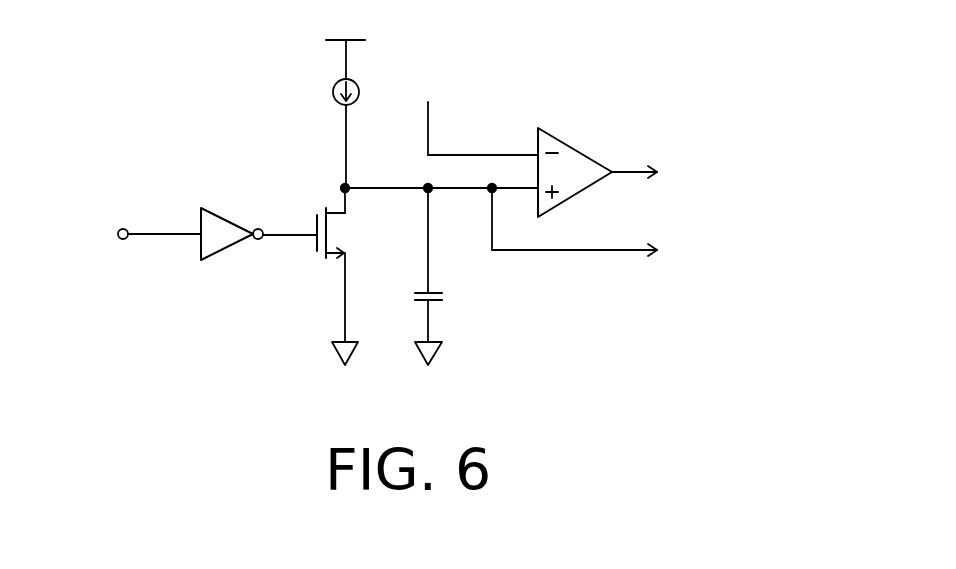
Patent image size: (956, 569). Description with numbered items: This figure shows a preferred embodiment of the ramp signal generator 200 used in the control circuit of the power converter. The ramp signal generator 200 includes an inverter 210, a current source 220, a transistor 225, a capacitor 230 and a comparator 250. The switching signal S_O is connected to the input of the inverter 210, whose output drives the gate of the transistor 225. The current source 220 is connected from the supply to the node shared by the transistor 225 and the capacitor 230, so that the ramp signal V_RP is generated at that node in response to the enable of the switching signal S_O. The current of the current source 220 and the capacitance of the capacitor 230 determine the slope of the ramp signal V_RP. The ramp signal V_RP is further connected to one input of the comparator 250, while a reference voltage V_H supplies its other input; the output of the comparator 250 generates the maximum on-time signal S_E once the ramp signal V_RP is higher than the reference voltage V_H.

The ramp signal generator 200 is at (793, 404).
The inverter 210 is at (224, 249).
The current source 220 is at (333, 99).
The transistor 225 is at (329, 233).
The capacitor 230 is at (445, 291).
The comparator 250 is at (578, 147).